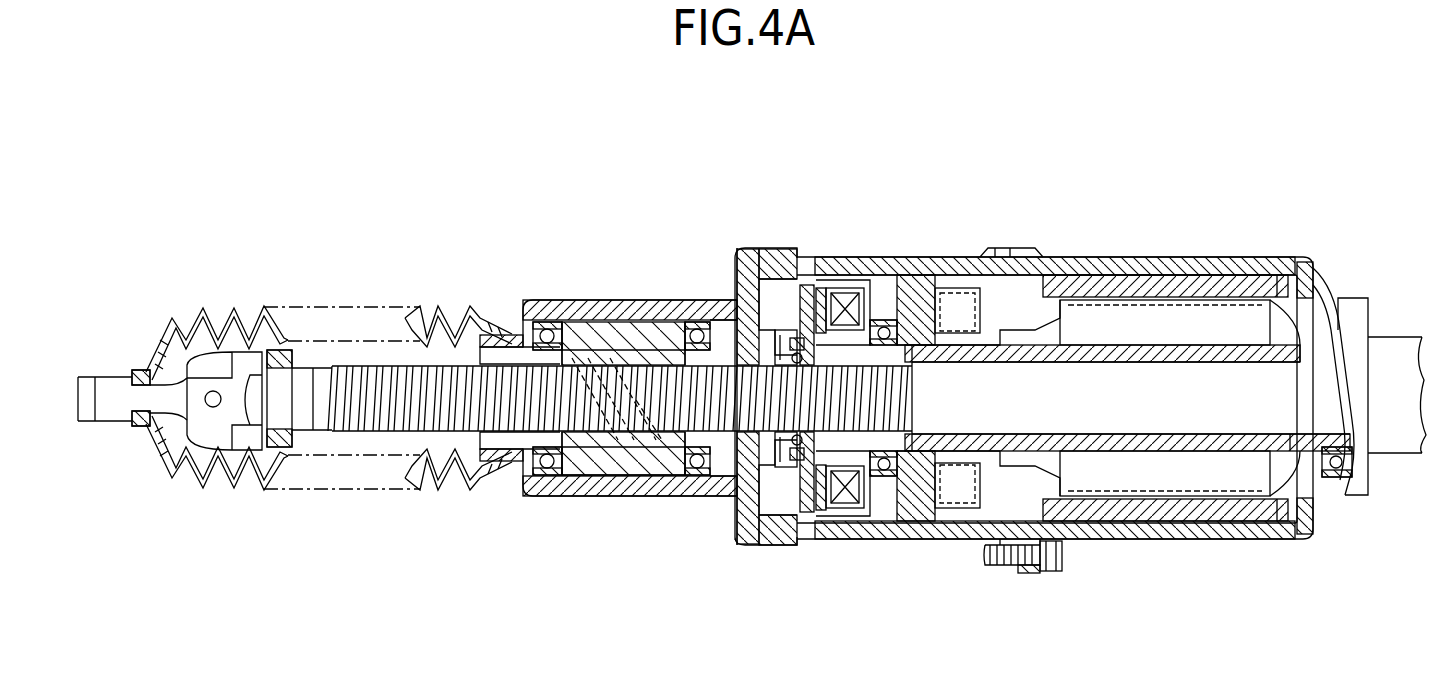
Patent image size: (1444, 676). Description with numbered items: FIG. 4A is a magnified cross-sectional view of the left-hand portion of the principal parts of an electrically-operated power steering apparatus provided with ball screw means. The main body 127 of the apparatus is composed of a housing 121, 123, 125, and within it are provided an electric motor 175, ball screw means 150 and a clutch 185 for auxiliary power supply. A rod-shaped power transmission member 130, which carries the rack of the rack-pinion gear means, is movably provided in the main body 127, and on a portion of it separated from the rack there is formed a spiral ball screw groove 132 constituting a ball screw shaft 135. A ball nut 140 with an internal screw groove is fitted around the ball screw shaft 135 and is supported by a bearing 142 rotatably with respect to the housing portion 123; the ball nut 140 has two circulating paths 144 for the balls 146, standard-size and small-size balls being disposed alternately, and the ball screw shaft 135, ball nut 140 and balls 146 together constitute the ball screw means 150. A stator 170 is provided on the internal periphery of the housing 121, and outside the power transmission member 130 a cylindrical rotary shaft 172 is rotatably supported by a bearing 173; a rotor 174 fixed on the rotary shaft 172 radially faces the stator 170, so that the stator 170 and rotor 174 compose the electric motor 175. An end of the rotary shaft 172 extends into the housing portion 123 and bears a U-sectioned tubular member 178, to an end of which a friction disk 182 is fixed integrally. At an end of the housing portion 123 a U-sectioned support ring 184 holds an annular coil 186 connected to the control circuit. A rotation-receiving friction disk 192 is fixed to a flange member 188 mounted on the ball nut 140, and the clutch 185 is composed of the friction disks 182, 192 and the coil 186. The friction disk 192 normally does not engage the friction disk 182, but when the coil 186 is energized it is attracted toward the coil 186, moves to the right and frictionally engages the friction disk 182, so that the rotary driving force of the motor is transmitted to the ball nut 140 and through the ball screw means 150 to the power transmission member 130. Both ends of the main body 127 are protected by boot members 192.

The housing 121 is at (1172, 270).
The housing portion 123 is at (948, 275).
The housing 125 is at (688, 312).
The main body 127 is at (757, 240).
The power transmission member 130 is at (1127, 398).
The spiral ball screw groove 132 is at (497, 338).
The ball screw shaft 135 is at (468, 347).
The ball nut 140 is at (578, 335).
The bearing 142 is at (547, 475).
The circulating path 144 is at (615, 490).
The balls 146 is at (595, 455).
The ball screw means 150 is at (643, 322).
The stator 170 is at (1256, 270).
The rotary shaft 172 is at (1185, 455).
The bearing 173 is at (1338, 480).
The rotor 174 is at (1180, 398).
The electric motor 175 is at (1094, 262).
The tubular member 178 is at (872, 315).
The friction disk 182 is at (842, 280).
The support ring 184 is at (880, 510).
The clutch 185 is at (807, 290).
The annular coil 186 is at (850, 500).
The flange member 188 is at (780, 470).
The rotation-receiving friction disk 192 is at (420, 457).